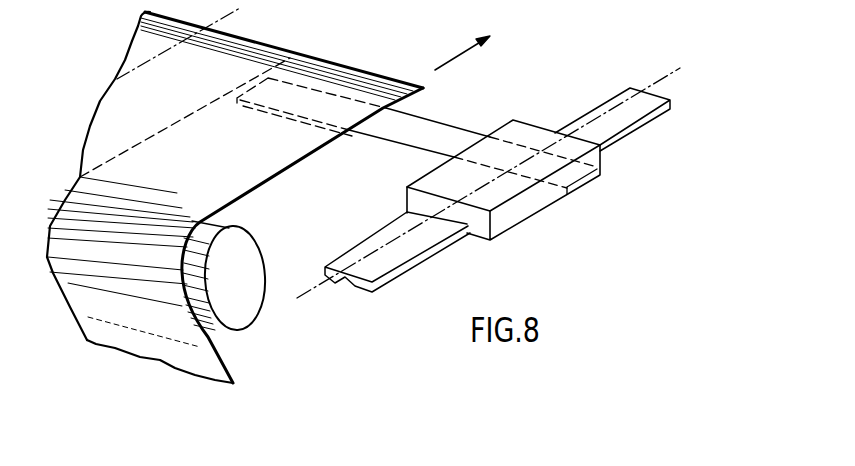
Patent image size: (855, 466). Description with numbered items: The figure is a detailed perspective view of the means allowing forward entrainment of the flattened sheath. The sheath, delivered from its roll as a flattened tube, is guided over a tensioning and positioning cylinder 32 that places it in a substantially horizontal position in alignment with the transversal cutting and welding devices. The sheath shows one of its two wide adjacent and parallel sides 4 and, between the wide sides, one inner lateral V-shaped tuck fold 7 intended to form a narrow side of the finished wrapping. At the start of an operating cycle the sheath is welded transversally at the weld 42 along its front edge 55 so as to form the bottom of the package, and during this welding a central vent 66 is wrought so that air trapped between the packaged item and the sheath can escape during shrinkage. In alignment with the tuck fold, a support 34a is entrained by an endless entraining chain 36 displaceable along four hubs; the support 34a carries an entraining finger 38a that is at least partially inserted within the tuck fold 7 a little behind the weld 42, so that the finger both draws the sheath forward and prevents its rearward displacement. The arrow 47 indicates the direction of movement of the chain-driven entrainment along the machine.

The vent 66 is at (172, 35).
The front edge 55 is at (332, 63).
The weld 42 is at (360, 88).
The inner lateral V-shaped tuck fold 7 is at (207, 106).
The wide side 4 is at (300, 153).
The tensioning and positioning cylinder 32 is at (247, 248).
The entraining finger 38a is at (440, 136).
The support 34a is at (512, 210).
The endless entraining chain 36 is at (627, 90).
The direction of movement arrow 47 is at (460, 55).